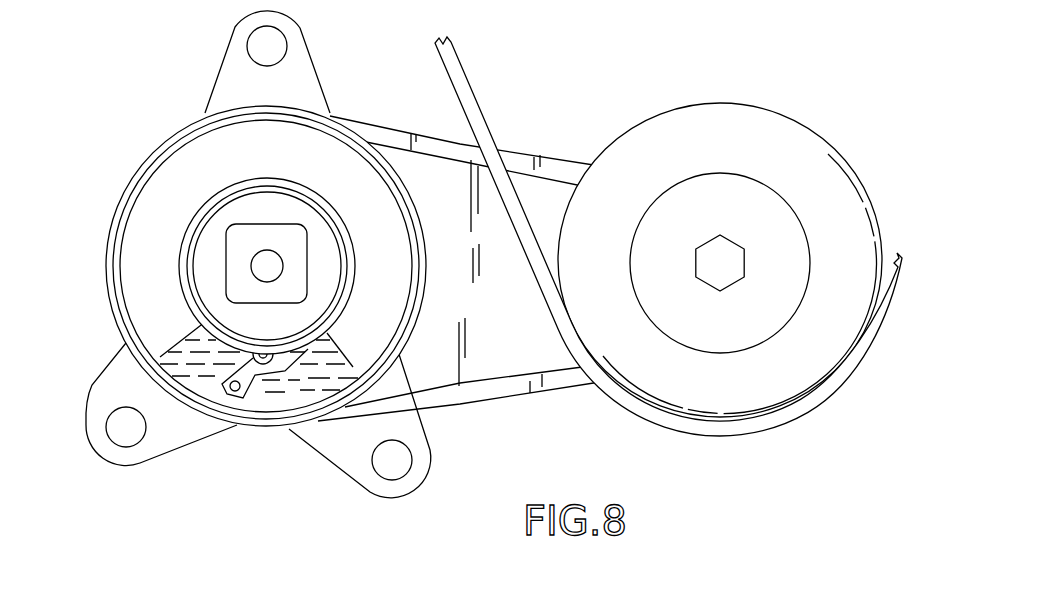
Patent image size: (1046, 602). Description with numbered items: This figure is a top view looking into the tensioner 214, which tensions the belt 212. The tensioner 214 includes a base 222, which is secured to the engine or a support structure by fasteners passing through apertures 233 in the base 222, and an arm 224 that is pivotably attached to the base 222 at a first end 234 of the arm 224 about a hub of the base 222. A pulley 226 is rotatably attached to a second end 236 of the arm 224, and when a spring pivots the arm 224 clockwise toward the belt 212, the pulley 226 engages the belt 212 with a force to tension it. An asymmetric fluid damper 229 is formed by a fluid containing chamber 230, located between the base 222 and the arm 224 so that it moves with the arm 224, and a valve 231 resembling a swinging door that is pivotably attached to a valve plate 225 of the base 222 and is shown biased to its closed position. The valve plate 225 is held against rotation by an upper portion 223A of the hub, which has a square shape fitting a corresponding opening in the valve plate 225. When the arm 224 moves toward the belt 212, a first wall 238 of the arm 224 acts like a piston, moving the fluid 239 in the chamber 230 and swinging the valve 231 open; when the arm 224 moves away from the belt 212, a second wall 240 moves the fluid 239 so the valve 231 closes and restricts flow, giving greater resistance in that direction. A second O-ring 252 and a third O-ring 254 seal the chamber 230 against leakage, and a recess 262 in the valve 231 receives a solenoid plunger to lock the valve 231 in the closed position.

The belt 212 is at (467, 82).
The tensioner 214 is at (641, 66).
The base 222 is at (125, 382).
The upper portion of the hub 223A is at (233, 250).
The arm 224 is at (513, 355).
The valve plate 225 is at (190, 221).
The pulley 226 is at (798, 142).
The asymmetric fluid damper 229 is at (190, 372).
The fluid containing chamber 230 is at (328, 375).
The valve 231 is at (254, 380).
The apertures 233 is at (289, 40).
The first end of the arm 234 is at (138, 281).
The second end of the arm 236 is at (557, 190).
The first wall of the arm 238 is at (421, 299).
The fluid 239 is at (288, 377).
The second wall of the arm 240 is at (185, 337).
The second O-ring 252 is at (281, 187).
The third O-ring 254 is at (343, 131).
The recess 262 is at (236, 394).